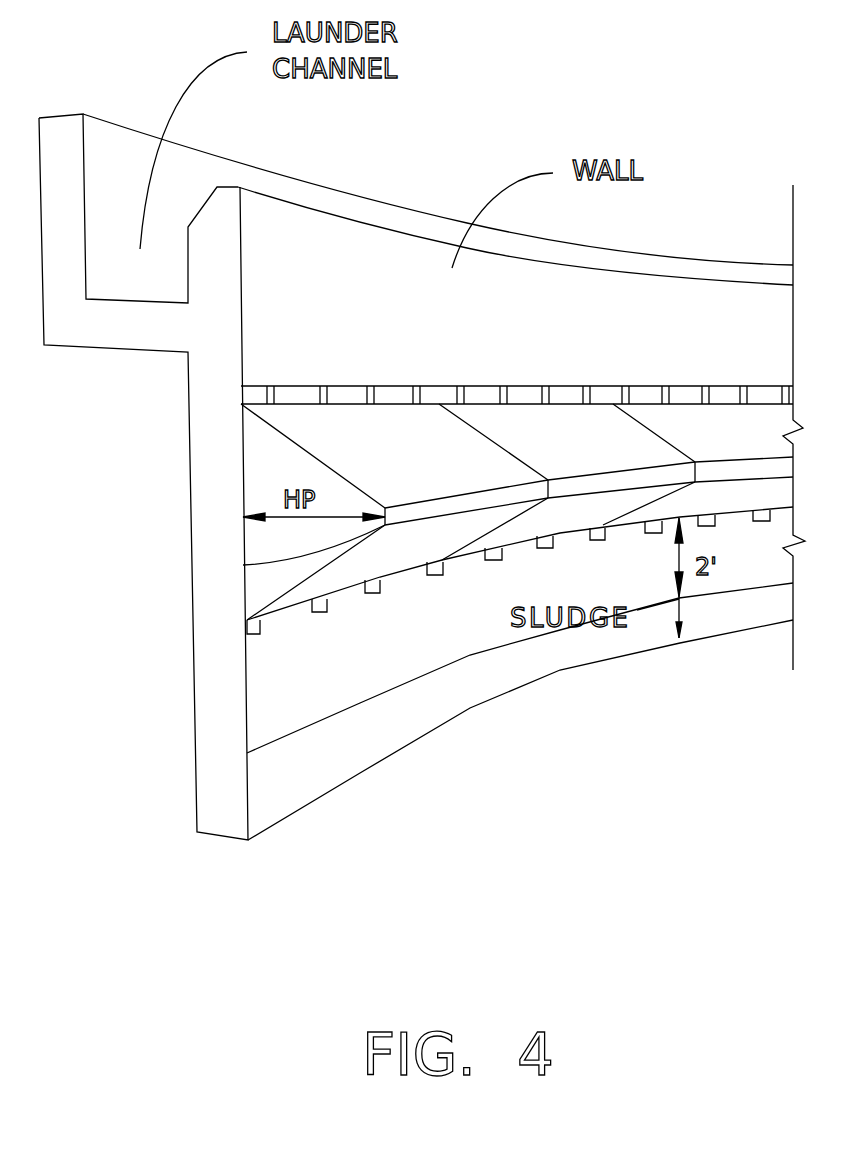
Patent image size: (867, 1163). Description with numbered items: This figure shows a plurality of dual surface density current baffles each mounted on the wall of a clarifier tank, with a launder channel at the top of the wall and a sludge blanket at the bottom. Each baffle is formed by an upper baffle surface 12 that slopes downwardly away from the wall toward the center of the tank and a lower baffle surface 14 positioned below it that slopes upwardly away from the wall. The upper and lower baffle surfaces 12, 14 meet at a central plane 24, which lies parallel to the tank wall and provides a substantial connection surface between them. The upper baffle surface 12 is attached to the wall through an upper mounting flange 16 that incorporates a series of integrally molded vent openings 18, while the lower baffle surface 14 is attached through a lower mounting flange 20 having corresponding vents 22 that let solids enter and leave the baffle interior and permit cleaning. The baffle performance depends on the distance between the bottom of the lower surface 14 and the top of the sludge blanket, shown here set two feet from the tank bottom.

The upper baffle surface 12 is at (328, 444).
The lower baffle surface 14 is at (395, 545).
The upper mounting flange 16 is at (436, 386).
The vent openings 18 is at (325, 386).
The lower mounting flange 20 is at (375, 593).
The vents 22 is at (290, 615).
The central plane 24 is at (243, 565).